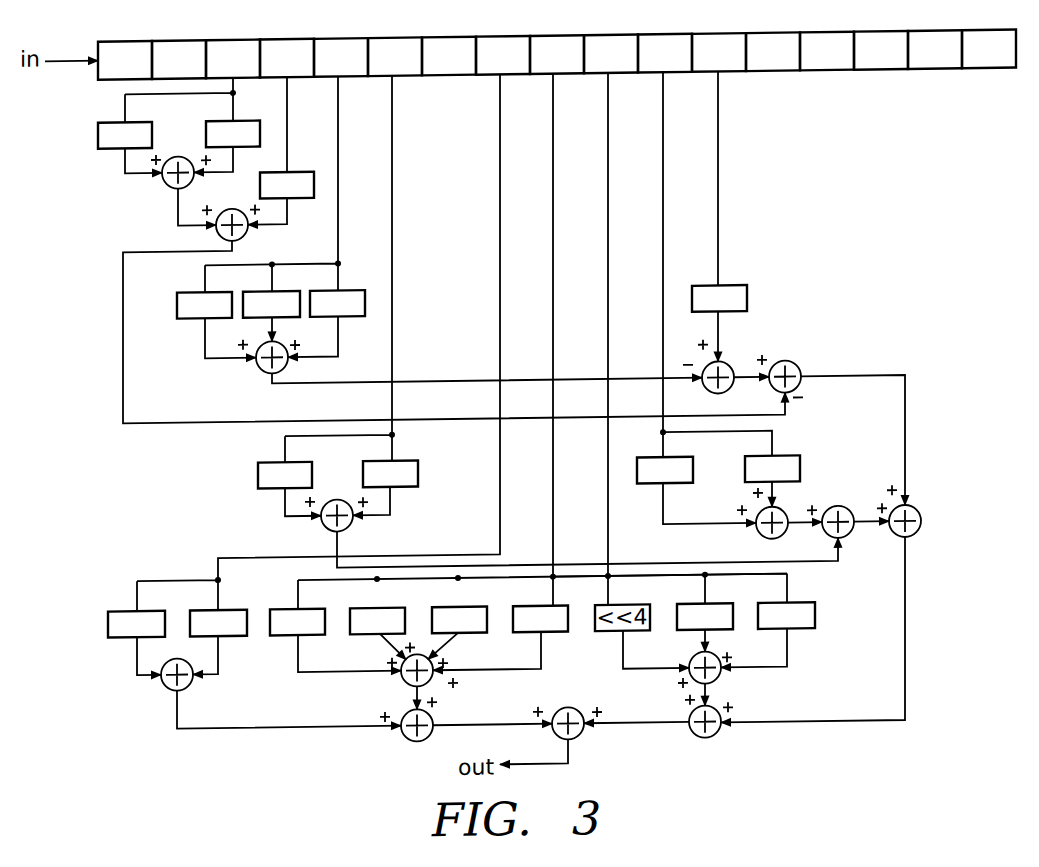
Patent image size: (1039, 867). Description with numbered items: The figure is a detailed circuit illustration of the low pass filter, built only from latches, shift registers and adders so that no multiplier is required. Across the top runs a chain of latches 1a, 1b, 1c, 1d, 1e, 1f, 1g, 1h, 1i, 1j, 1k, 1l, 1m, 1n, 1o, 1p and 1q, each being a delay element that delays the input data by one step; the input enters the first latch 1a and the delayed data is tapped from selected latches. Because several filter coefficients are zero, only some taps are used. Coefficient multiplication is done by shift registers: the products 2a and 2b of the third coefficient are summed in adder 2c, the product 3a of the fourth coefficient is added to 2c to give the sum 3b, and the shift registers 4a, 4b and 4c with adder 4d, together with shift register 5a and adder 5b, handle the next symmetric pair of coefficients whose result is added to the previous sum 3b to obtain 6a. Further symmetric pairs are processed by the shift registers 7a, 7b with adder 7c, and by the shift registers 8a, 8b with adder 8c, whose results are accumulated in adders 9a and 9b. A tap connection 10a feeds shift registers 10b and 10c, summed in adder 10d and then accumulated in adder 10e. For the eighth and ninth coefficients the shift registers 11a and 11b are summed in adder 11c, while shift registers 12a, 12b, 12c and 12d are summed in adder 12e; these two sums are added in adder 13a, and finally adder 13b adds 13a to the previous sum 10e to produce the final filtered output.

The latch 1a is at (125, 48).
The latch 1b is at (179, 47).
The latch 1c is at (233, 47).
The latch 1d is at (287, 46).
The latch 1e is at (341, 45).
The latch 1f is at (395, 44).
The latch 1g is at (449, 44).
The latch 1h is at (503, 43).
The latch 1i is at (557, 42).
The latch 1j is at (611, 42).
The latch 1k is at (665, 41).
The latch 1l is at (719, 40).
The latch 1m is at (773, 39).
The latch 1n is at (827, 39).
The latch 1o is at (881, 38).
The latch 1p is at (935, 37).
The latch 1q is at (989, 37).
The multiplied value of coefficient H1(3) 2a is at (98, 134).
The multiplied value of coefficient H1(3) 2b is at (206, 134).
The multiplied value of coefficient H1(3) 2c is at (166, 187).
The multiplied value of coefficients H1(4) and H1(11) 3a is at (300, 176).
The added value 3b is at (246, 238).
The shift register 4a is at (180, 297).
The shift register 4b is at (293, 321).
The shift register 4c is at (349, 295).
The adder 4d is at (262, 372).
The shift register 5a is at (747, 306).
The adder 5b is at (729, 375).
The adder 6a is at (796, 375).
The shift register 7a is at (258, 480).
The shift register 7b is at (363, 474).
The adder 7c is at (350, 531).
The shift register 8a is at (641, 466).
The shift register 8b is at (800, 478).
The adder 8c is at (760, 523).
The adder 9a is at (849, 545).
The adder 9b is at (916, 521).
The tap connection 10a is at (670, 579).
The shift register 10b is at (690, 639).
The shift register 10c is at (815, 624).
The adder 10d is at (719, 688).
The adder 10e is at (718, 742).
The shift register 11a is at (108, 628).
The shift register 11b is at (228, 613).
The adder 11c is at (190, 690).
The shift register 12a is at (286, 639).
The shift register 12b is at (362, 639).
The shift register 12c is at (472, 639).
The shift register 12d is at (555, 639).
The adder 12e is at (432, 686).
The adder 13a is at (404, 720).
The adder 13b is at (600, 707).